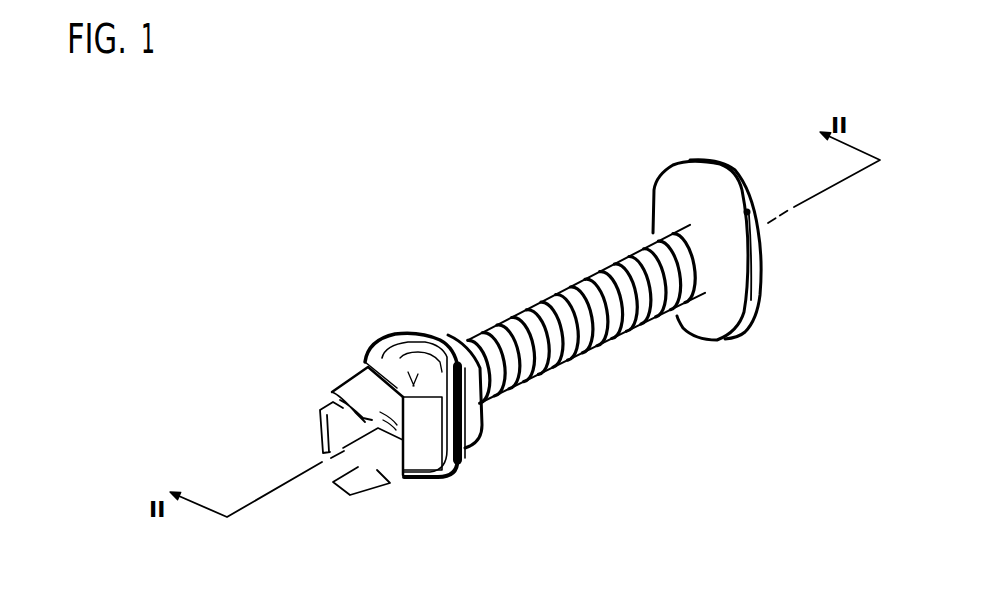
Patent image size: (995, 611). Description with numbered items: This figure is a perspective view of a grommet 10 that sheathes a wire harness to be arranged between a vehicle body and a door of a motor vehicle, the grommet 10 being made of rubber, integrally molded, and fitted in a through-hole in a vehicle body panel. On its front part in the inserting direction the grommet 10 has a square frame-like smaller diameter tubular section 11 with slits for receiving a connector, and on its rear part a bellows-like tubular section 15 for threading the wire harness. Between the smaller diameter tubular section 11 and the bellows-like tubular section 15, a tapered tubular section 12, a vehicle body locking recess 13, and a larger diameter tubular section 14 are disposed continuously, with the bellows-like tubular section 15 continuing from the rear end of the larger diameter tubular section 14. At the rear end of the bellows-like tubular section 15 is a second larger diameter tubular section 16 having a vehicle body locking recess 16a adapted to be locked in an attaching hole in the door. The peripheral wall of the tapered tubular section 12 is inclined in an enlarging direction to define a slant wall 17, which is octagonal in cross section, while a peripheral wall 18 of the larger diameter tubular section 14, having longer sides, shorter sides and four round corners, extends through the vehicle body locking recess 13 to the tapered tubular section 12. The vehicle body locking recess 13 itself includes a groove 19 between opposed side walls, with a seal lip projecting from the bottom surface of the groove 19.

The grommet 10 is at (636, 342).
The smaller diameter tubular section 11 is at (358, 370).
The tapered tubular section 12 is at (368, 363).
The vehicle body locking recess 13 is at (384, 338).
The larger diameter tubular section 14 is at (413, 334).
The bellows-like tubular section 15 is at (573, 280).
The second larger diameter tubular section 16 is at (653, 194).
The vehicle body locking recess 16a is at (768, 250).
The slant wall 17 is at (440, 347).
The peripheral wall 18 is at (446, 342).
The groove 19 is at (460, 463).